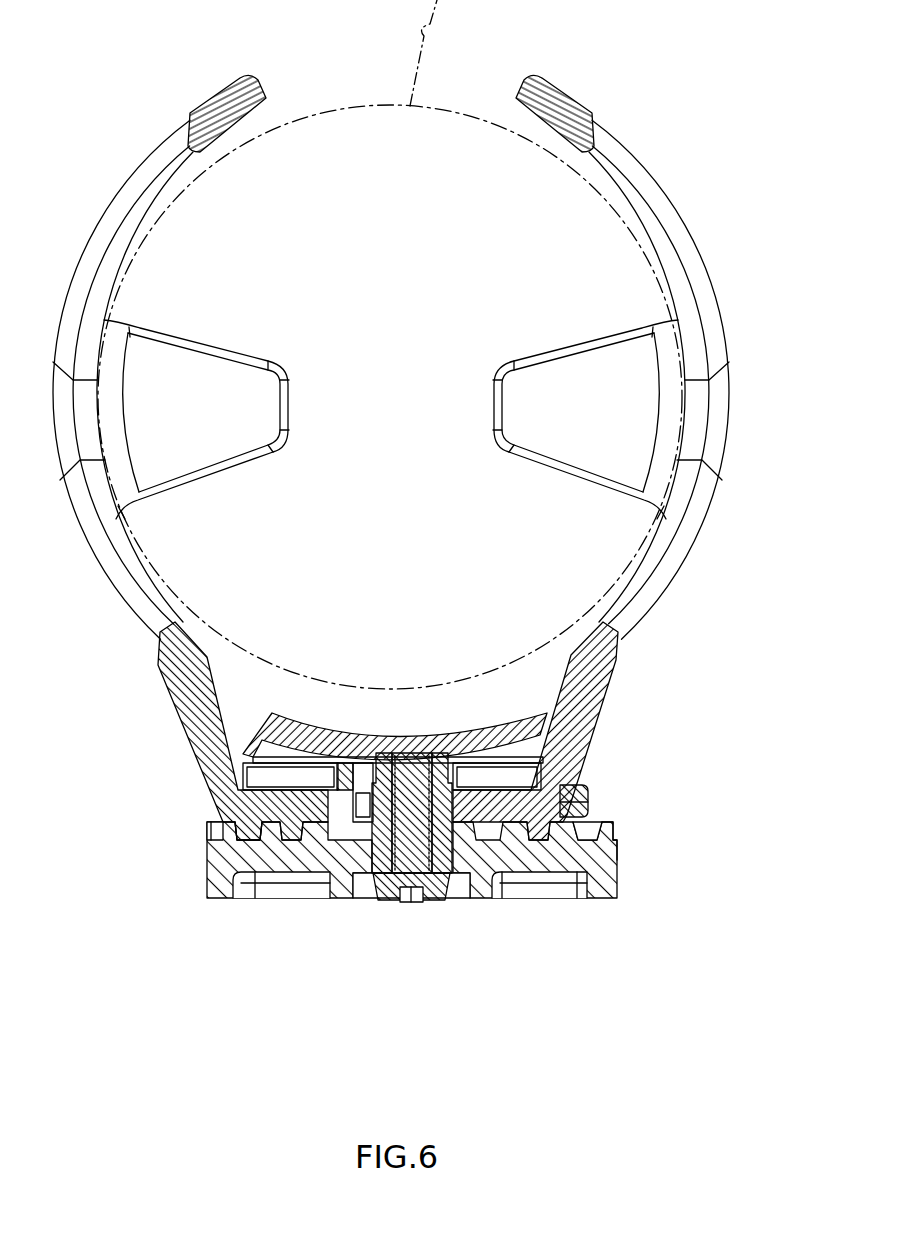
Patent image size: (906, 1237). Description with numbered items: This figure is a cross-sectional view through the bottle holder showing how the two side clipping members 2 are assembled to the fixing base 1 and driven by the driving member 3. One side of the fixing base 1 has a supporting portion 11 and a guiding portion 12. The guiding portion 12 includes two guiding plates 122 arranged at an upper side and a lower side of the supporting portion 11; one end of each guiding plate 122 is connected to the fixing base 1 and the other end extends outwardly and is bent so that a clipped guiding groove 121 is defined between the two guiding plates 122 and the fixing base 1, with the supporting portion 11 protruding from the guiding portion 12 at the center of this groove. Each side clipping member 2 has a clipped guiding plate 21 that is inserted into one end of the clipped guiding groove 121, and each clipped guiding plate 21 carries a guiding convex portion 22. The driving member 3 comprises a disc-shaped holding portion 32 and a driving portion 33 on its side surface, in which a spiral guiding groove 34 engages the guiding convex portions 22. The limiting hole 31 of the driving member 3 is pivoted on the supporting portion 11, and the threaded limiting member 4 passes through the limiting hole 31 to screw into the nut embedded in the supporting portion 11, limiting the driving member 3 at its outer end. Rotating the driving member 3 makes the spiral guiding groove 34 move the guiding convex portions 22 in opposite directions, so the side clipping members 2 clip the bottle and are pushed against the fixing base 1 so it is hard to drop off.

The fixing base 1 is at (408, 745).
The side clipping member 2 is at (140, 177).
The driving member 3 is at (486, 871).
The limiting member 4 is at (400, 893).
The supporting portion 11 is at (376, 860).
The guiding portion 12 is at (610, 731).
The clipped guiding plate 21 is at (248, 800).
The guiding convex portion 22 is at (265, 840).
The limiting hole 31 is at (452, 870).
The holding portion 32 is at (608, 876).
The driving portion 33 is at (603, 833).
The spiral guiding groove 34 is at (590, 812).
The clipped guiding groove 121 is at (574, 782).
The guiding plate 122 is at (583, 800).